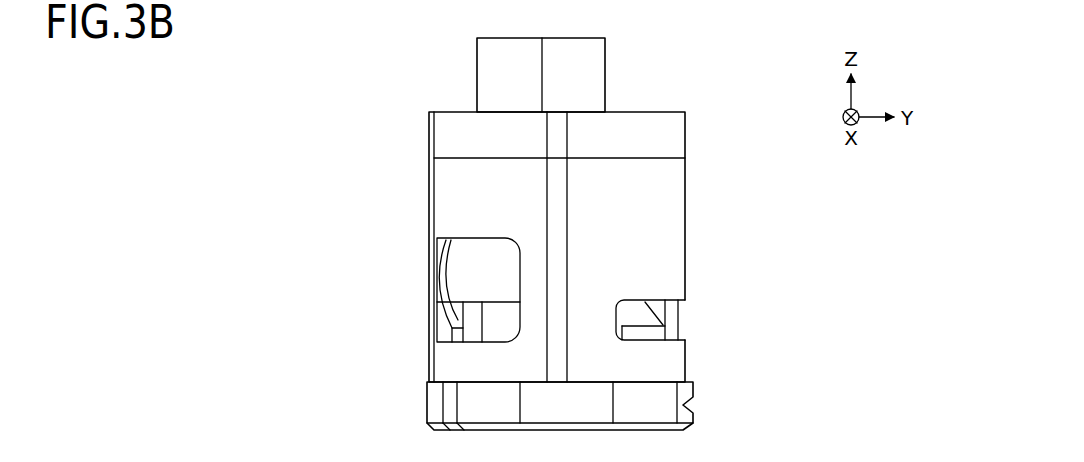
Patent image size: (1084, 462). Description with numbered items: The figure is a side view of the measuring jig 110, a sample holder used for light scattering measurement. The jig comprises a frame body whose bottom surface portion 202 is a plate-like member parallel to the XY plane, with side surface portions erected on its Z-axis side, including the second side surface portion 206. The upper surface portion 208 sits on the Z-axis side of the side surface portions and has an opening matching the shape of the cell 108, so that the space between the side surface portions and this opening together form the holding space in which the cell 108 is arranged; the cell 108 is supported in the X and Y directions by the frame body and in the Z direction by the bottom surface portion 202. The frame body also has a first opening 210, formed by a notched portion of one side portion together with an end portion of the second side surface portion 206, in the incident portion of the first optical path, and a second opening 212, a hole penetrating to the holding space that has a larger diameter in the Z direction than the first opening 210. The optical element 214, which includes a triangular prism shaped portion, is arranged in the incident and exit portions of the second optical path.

The measuring jig 110 is at (398, 82).
The cell 108 is at (573, 38).
The second side surface portion 206 is at (685, 190).
The upper surface portion 208 is at (673, 112).
The optical element 214 is at (460, 270).
The second opening 212 is at (445, 293).
The first opening 210 is at (667, 315).
The bottom surface portion 202 is at (690, 410).